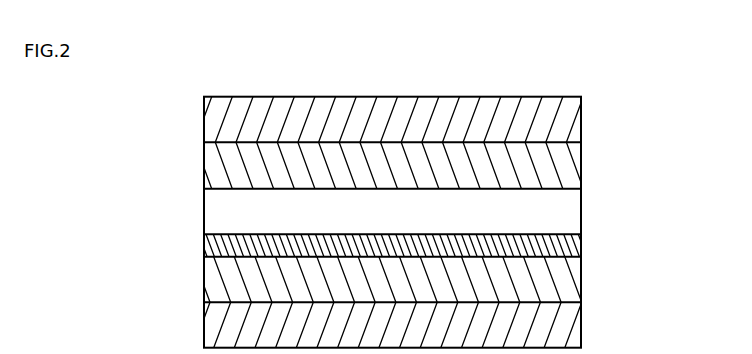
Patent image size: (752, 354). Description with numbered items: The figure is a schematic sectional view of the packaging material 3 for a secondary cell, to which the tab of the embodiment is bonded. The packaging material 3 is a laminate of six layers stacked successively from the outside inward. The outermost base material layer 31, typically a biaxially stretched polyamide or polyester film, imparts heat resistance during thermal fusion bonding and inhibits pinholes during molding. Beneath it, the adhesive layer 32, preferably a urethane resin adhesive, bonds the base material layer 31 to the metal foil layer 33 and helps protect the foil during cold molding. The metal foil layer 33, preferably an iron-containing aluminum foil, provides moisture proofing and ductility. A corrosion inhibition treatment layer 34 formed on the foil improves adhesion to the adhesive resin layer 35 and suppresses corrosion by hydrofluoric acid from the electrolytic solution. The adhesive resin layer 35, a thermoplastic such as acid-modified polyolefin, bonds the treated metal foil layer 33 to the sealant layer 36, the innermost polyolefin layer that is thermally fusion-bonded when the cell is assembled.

The packaging material 3 is at (690, 70).
The base material layer 31 is at (565, 120).
The adhesive layer 32 is at (565, 167).
The metal foil layer 33 is at (566, 216).
The corrosion inhibition treatment layer 34 is at (564, 246).
The adhesive resin layer 35 is at (562, 279).
The sealant layer 36 is at (567, 326).